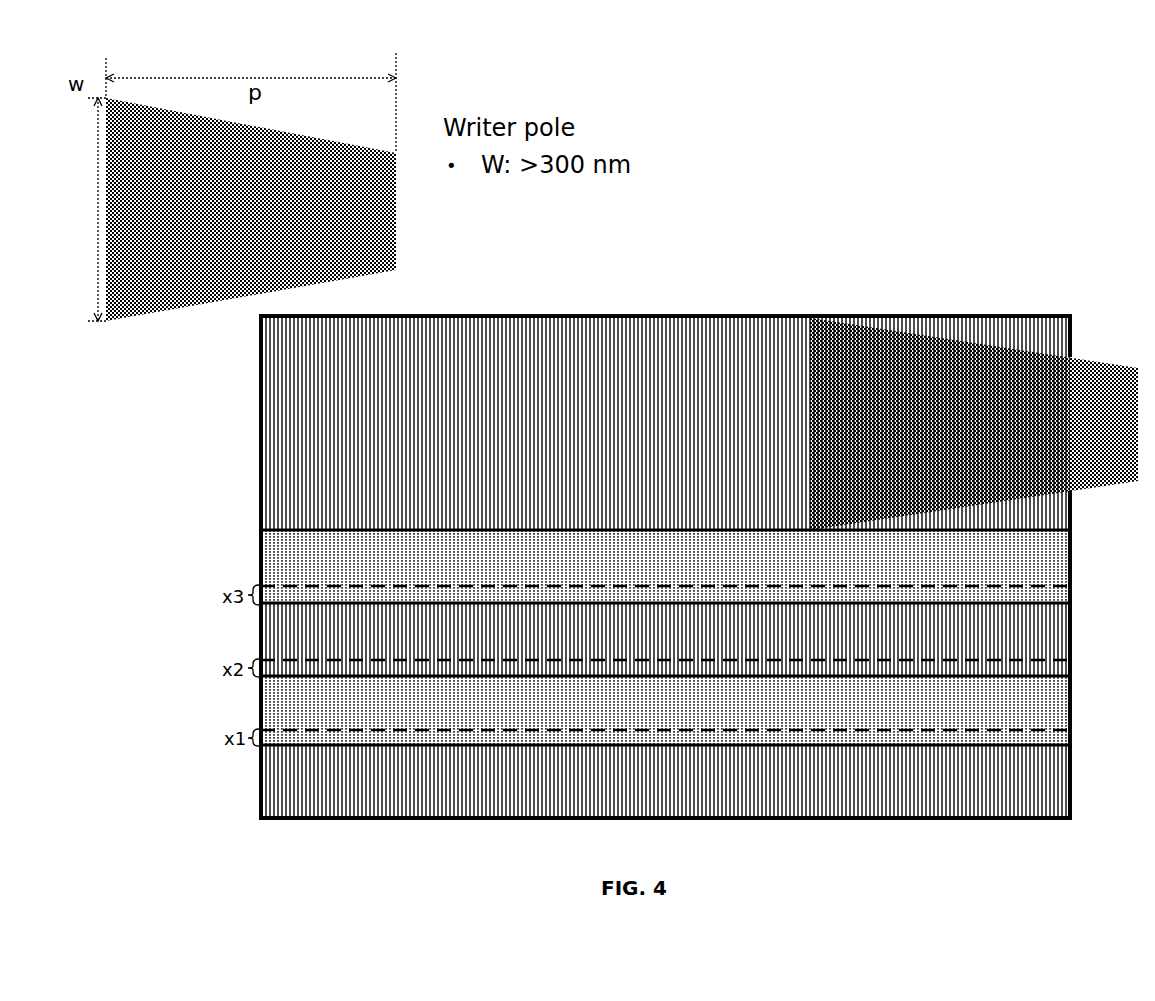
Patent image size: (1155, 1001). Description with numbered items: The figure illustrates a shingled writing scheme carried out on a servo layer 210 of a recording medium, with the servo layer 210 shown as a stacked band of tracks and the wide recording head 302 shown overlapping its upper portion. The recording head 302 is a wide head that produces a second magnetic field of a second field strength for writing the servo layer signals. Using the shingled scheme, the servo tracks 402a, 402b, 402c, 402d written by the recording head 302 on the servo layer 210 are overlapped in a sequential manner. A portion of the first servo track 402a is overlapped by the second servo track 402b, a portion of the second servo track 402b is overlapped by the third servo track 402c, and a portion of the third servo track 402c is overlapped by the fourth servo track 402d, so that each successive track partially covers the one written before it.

The servo layer 210 is at (622, 307).
The recording head 302 is at (1095, 357).
The first servo track 402a is at (1068, 738).
The second servo track 402b is at (1068, 736).
The third servo track 402c is at (1068, 596).
The fourth servo track 402d is at (1068, 523).